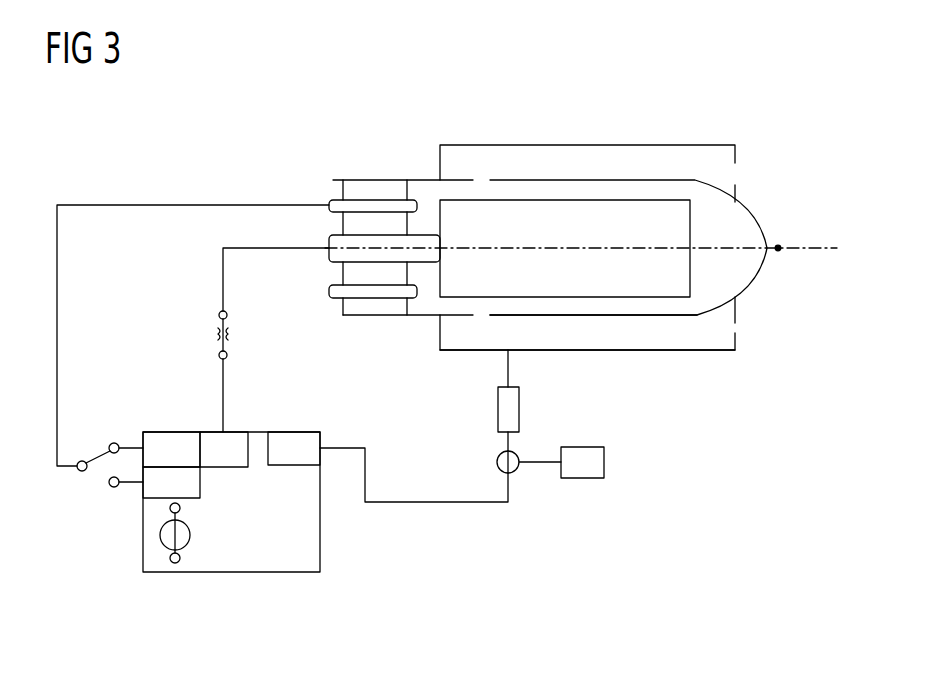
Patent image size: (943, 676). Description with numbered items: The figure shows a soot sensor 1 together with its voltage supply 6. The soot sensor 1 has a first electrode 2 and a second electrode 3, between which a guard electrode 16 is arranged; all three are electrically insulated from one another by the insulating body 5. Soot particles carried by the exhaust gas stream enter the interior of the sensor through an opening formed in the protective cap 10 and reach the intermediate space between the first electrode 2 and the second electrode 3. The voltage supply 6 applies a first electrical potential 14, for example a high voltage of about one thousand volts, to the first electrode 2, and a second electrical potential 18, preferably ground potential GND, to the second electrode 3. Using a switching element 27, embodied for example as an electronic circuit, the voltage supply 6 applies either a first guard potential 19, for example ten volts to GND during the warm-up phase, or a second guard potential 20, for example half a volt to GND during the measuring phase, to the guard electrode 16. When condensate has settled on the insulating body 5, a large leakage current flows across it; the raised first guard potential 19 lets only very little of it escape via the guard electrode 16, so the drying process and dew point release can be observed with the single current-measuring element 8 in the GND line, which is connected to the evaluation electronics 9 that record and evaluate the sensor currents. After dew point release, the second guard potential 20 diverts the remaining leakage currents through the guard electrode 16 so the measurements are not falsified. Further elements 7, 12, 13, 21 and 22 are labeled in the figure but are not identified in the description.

The soot sensor 1 is at (751, 114).
The first electrode 2 is at (610, 297).
The second electrode 3 is at (558, 315).
The insulating body 5 is at (385, 190).
The voltage supply 6 is at (320, 548).
The resistor 7 is at (498, 400).
The current-measuring element 8 is at (497, 462).
The evaluation electronics 9 is at (604, 462).
The protective cap 10 is at (698, 350).
The housing 12 is at (735, 174).
The channel 13 is at (480, 180).
The first electrical potential 14 is at (778, 251).
The guard electrode 16 is at (353, 200).
The second electrical potential 18 is at (292, 432).
The first guard potential 19 is at (143, 492).
The second guard potential 20 is at (168, 432).
The longitudinal axis 21 is at (588, 248).
The connector 22 is at (218, 333).
The switching element 27 is at (94, 480).